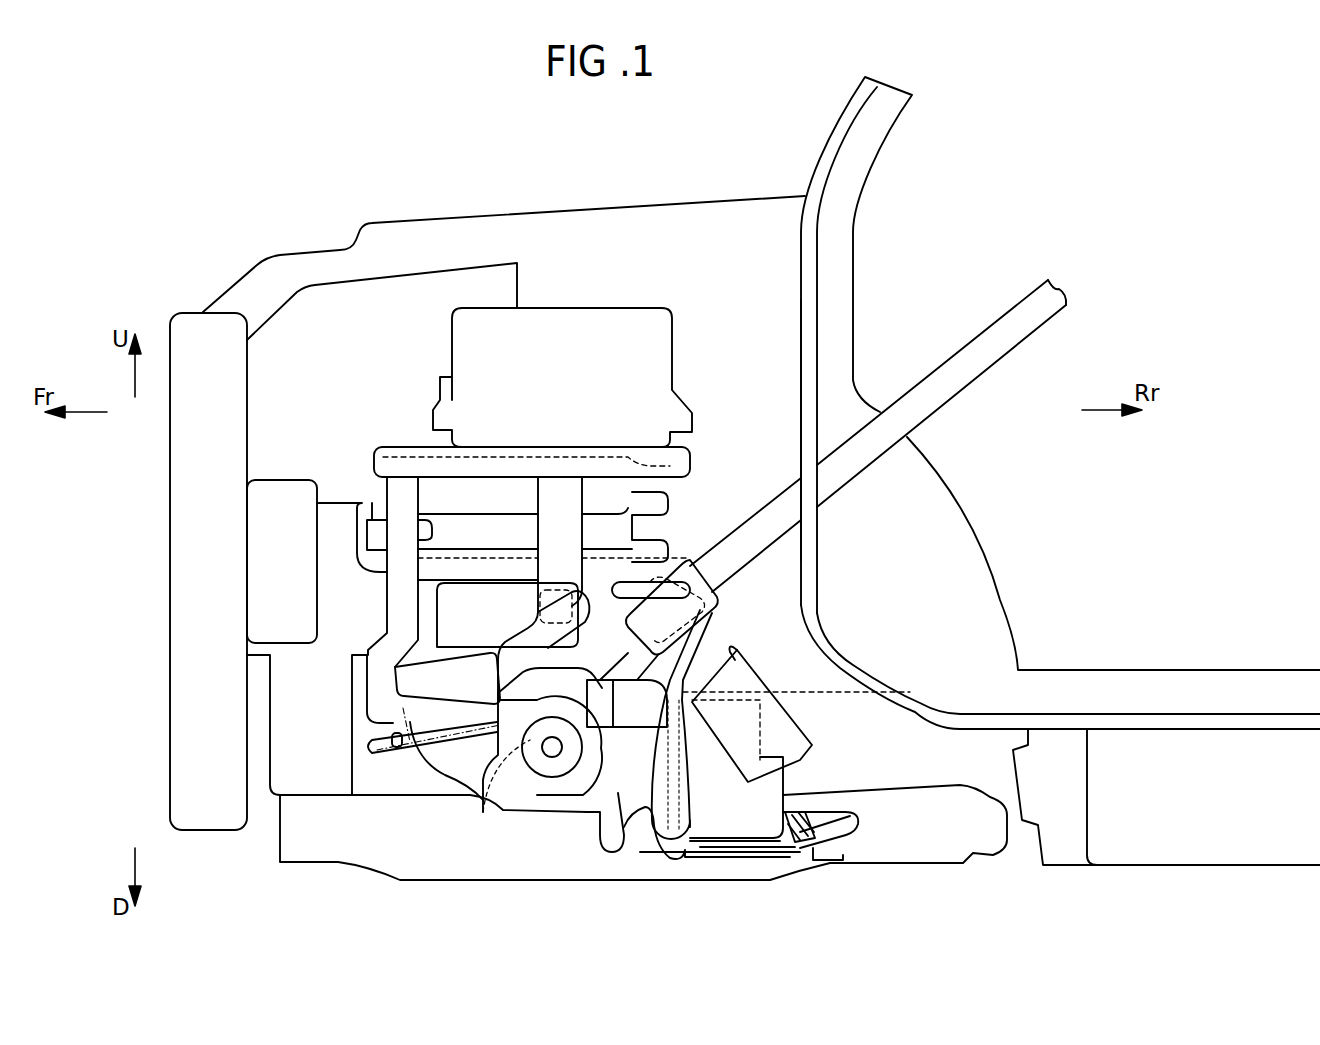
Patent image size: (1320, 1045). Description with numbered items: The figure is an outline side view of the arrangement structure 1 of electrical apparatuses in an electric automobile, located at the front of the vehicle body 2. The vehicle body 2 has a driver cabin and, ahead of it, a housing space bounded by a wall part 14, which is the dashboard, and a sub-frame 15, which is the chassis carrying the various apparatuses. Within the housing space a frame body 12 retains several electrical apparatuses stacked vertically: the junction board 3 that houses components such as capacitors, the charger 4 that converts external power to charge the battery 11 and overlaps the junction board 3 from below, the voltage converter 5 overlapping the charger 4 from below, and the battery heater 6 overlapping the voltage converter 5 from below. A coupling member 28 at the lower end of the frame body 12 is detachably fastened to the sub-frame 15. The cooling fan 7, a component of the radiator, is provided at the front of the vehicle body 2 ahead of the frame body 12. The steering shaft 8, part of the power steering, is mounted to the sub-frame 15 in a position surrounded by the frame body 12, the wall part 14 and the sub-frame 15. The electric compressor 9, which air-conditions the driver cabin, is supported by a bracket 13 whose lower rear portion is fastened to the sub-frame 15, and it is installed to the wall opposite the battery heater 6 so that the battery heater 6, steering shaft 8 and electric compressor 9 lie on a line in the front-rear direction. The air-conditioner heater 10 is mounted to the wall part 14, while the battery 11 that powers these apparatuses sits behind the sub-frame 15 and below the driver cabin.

The arrangement structure of electrical apparatuses 1 is at (135, 192).
The vehicle body 2 is at (262, 258).
The junction board 3 is at (452, 343).
The charger 4 is at (420, 513).
The voltage converter 5 is at (440, 615).
The battery heater 6 is at (407, 740).
The cooling fan 7 is at (275, 480).
The steering shaft 8 is at (977, 363).
The electric compressor 9 is at (711, 758).
The air-conditioner heater 10 is at (793, 715).
The battery 11 is at (1217, 865).
The frame body 12 is at (393, 462).
The bracket 13 is at (735, 858).
The wall part 14 is at (817, 266).
The sub-frame 15 is at (607, 880).
The coupling member 28 is at (413, 722).